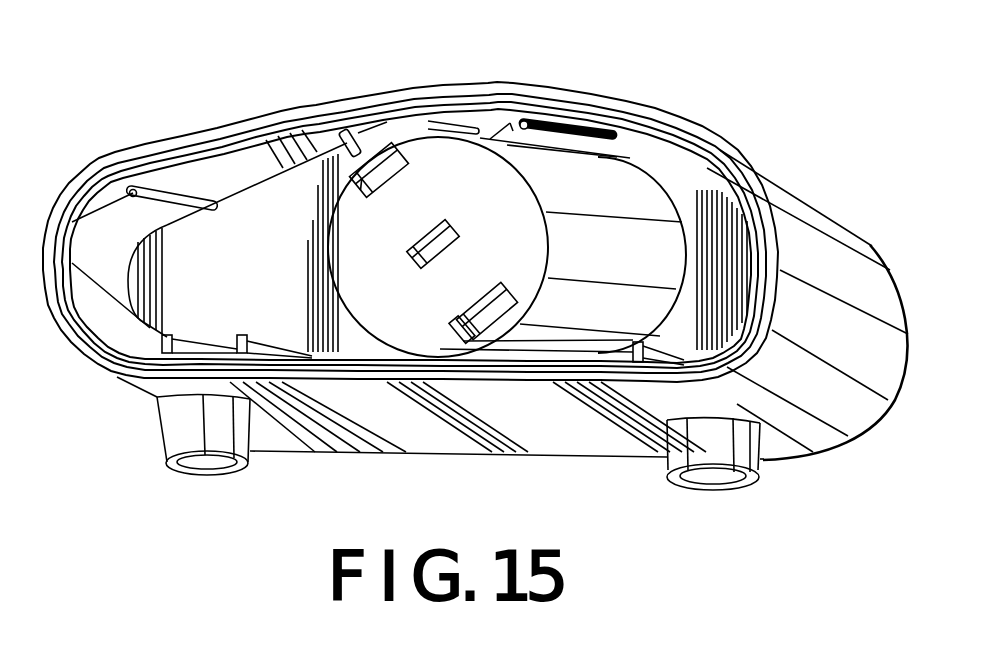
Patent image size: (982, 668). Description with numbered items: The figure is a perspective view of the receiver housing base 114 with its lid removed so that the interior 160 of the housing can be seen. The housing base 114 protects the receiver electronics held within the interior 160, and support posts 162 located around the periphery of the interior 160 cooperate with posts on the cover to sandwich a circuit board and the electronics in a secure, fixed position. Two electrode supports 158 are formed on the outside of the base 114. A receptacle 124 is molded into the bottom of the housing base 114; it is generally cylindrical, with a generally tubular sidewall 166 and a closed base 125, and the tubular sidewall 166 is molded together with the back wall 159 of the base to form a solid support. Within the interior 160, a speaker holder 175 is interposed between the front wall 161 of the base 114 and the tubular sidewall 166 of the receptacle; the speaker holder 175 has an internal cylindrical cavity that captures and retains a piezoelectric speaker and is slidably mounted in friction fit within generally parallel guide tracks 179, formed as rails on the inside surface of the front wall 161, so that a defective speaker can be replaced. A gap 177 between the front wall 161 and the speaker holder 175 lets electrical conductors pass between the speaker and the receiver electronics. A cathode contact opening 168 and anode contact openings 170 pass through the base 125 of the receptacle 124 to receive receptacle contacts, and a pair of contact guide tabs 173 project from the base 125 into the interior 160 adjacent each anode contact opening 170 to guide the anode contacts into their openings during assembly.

The housing base 114 is at (807, 242).
The receptacle 124 is at (637, 245).
The closed base 125 is at (528, 222).
The electrode supports 158 is at (230, 437).
The back wall 159 is at (390, 413).
The interior 160 is at (122, 266).
The front wall 161 is at (180, 140).
The support posts 162 is at (127, 190).
The tubular sidewall 166 is at (642, 187).
The cathode contact opening 168 is at (446, 215).
The anode contact openings 170 is at (397, 157).
The contact guide tabs 173 is at (340, 147).
The speaker holder 175 is at (370, 133).
The gap 177 is at (453, 123).
The guide tracks 179 is at (343, 150).